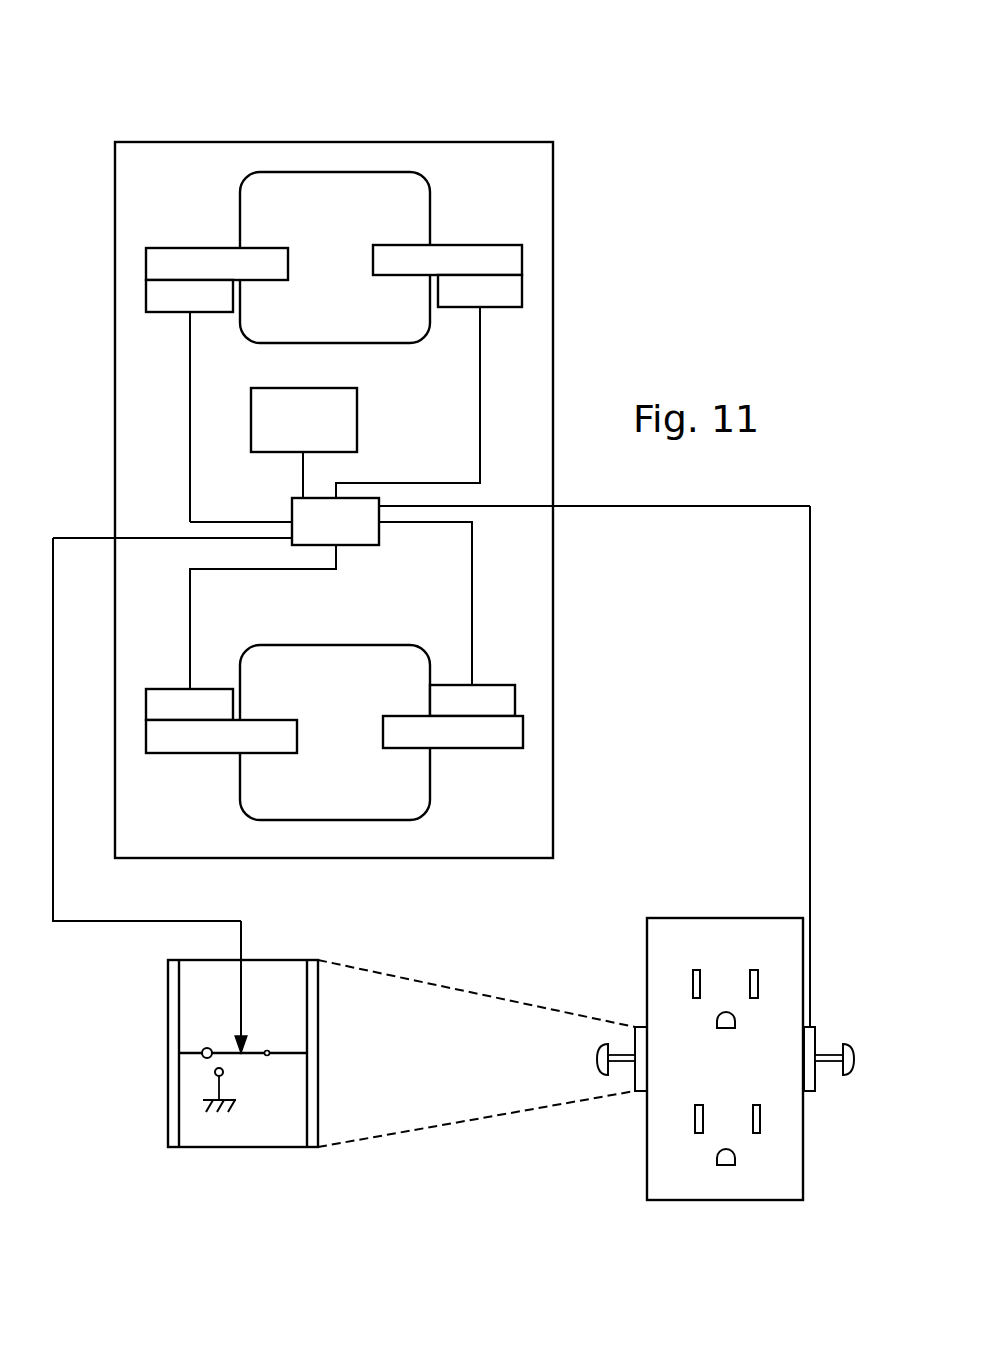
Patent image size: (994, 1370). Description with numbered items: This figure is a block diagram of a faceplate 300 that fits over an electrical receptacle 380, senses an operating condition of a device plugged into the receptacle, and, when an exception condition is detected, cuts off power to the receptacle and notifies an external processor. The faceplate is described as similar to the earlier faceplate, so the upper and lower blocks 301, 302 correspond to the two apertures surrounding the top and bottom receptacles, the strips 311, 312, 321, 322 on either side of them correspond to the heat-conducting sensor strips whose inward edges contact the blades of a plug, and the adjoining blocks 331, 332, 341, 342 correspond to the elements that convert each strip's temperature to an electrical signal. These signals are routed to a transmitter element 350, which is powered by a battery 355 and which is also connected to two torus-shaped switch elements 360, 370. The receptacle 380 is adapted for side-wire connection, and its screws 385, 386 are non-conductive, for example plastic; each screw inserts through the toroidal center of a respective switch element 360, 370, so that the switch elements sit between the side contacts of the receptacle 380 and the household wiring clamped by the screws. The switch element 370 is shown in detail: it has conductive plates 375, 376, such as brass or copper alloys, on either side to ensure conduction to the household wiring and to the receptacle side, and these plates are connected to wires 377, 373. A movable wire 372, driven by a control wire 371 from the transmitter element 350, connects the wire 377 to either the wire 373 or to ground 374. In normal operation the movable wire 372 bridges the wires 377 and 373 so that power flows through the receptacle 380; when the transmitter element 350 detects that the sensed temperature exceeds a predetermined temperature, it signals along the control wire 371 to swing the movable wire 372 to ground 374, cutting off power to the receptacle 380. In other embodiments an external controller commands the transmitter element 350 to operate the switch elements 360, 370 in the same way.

The faceplate 300 is at (493, 121).
The first sensor module 301 is at (335, 257).
The second sensor module 302 is at (335, 732).
The first sensor 311 is at (217, 264).
The second sensor 312 is at (447, 260).
The first signal conditioner 331 is at (219, 401).
The second signal conditioner 332 is at (429, 386).
The third sensor 321 is at (221, 736).
The fourth sensor 322 is at (453, 732).
The third signal conditioner 341 is at (189, 704).
The fourth signal conditioner 342 is at (472, 700).
The transmitter element 350 is at (431, 762).
The memory 355 is at (304, 443).
The switch element 360 is at (825, 1072).
The switch element 370 is at (267, 943).
The control wire 371 is at (257, 987).
The movable wire 372 is at (254, 1053).
The wire 373 is at (202, 1042).
The ground 374 is at (232, 1088).
The conductive plate 375 is at (334, 1053).
The conductive plate 376 is at (154, 1053).
The wire 377 is at (285, 1068).
The receptacle 380 is at (750, 910).
The screw 385 is at (839, 1047).
The screw 386 is at (602, 1048).